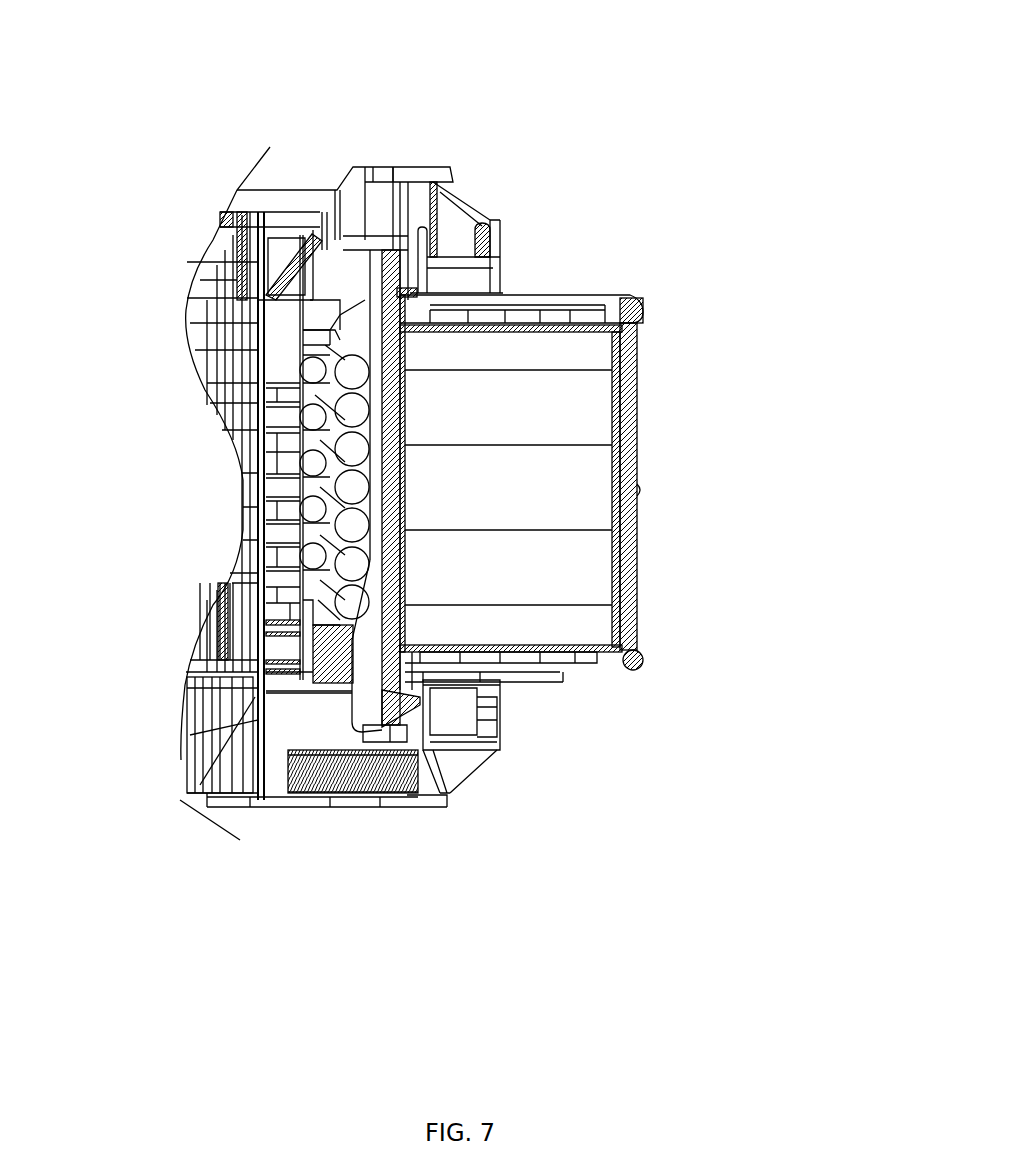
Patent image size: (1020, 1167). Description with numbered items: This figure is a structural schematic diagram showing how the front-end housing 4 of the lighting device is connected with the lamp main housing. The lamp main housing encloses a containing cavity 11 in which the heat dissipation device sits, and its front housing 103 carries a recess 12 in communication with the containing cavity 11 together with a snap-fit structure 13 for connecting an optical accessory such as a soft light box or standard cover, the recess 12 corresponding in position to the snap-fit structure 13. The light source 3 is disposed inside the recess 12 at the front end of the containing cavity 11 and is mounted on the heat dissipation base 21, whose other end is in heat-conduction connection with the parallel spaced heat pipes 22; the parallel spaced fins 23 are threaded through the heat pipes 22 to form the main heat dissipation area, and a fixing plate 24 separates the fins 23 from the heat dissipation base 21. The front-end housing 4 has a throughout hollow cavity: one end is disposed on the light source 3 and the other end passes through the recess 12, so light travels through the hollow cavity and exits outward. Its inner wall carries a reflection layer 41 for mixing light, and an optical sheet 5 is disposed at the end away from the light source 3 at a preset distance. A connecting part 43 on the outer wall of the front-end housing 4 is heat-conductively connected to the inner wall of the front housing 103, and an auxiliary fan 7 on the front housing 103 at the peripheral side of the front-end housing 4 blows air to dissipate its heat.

The containing cavity 11 is at (387, 210).
The connecting part 43 is at (393, 167).
The front housing 103 is at (462, 205).
The recess 12 is at (453, 287).
The front-end housing 4 is at (543, 293).
The reflection layer 41 is at (567, 418).
The optical sheet 5 is at (638, 547).
The light source 3 is at (403, 610).
The snap-fit structure 13 is at (450, 703).
The auxiliary fan 7 is at (330, 793).
The heat dissipation base 21 is at (185, 312).
The heat pipes 22 is at (225, 415).
The fins 23 is at (225, 620).
The fixing plate 24 is at (181, 760).